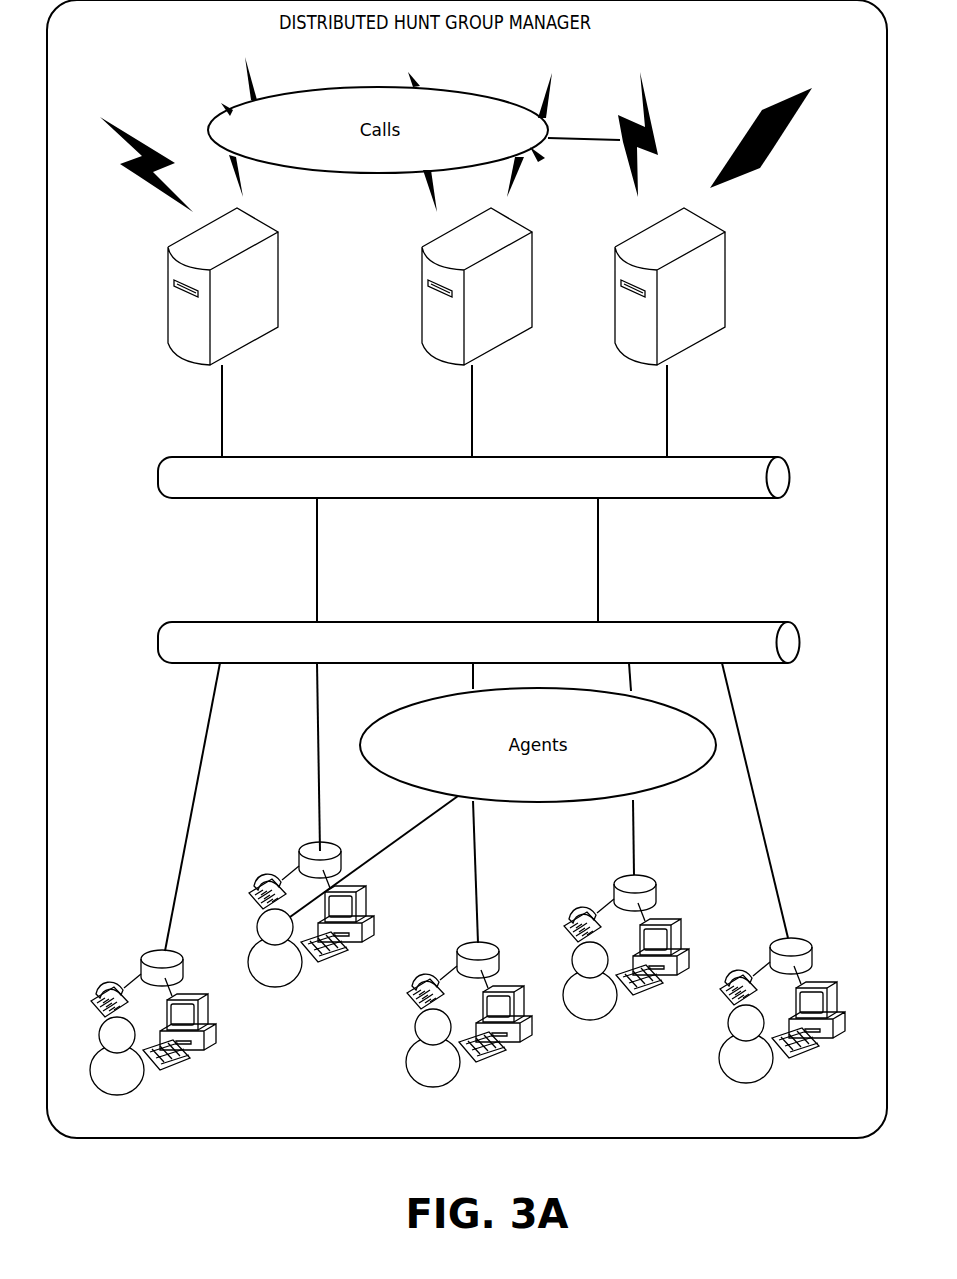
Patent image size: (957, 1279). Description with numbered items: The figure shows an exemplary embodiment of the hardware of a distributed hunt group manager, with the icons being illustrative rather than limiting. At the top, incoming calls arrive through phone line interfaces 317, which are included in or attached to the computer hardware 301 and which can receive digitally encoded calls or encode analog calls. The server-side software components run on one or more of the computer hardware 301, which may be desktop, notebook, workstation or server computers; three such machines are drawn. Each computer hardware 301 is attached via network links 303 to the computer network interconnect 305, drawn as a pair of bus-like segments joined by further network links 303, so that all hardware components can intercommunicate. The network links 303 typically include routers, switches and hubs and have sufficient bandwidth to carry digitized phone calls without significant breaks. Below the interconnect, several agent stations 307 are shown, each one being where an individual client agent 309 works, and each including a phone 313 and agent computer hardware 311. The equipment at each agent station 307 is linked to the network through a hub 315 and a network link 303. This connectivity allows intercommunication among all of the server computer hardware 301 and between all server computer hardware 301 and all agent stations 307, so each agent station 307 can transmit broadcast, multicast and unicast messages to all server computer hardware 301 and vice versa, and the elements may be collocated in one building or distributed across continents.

The computer hardware 301 is at (168, 271).
The network link 303 is at (222, 411).
The computer network interconnect 305 is at (158, 478).
The agent station 307 is at (487, 1083).
The client agent 309 is at (128, 1094).
The agent computer hardware 311 is at (206, 1050).
The phone 313 is at (90, 992).
The hub 315 is at (148, 952).
The phone line interface 317 is at (337, 182).